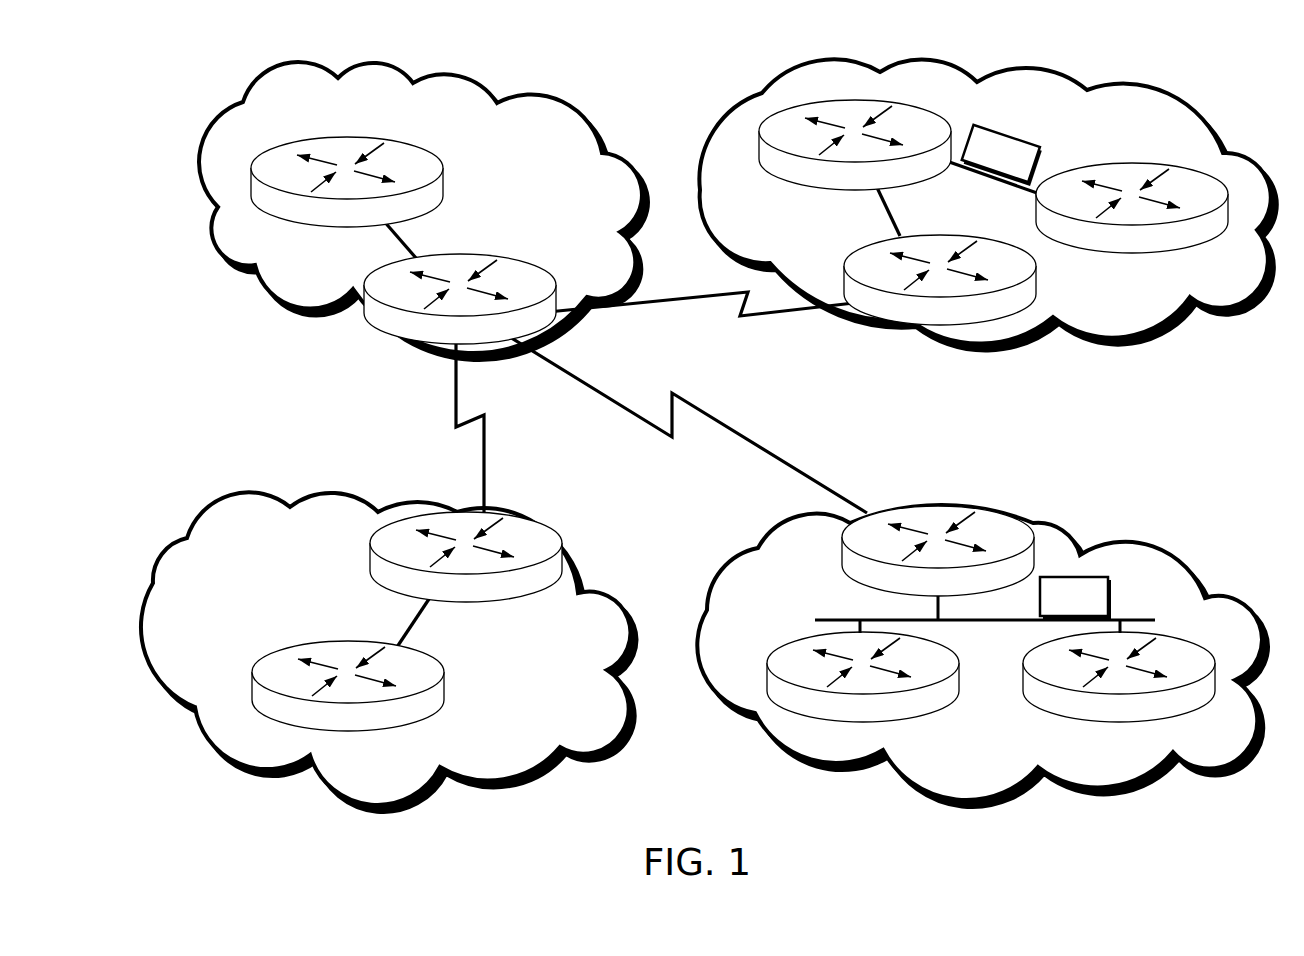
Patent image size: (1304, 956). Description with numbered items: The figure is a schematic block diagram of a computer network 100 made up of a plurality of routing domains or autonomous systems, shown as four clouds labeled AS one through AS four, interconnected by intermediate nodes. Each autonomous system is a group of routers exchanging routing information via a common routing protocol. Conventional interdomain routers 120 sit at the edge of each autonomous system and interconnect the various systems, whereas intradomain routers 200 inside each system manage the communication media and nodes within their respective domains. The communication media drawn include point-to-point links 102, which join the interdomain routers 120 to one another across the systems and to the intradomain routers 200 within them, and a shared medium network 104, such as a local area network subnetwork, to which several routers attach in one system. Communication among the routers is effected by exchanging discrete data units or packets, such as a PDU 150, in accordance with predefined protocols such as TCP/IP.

The computer network 100 is at (1213, 77).
The point-to-point links 102 is at (405, 234).
The shared medium network 104 is at (957, 619).
The interdomain router 120 is at (518, 258).
The PDU 150 is at (1023, 140).
The intradomain router 200 is at (412, 143).